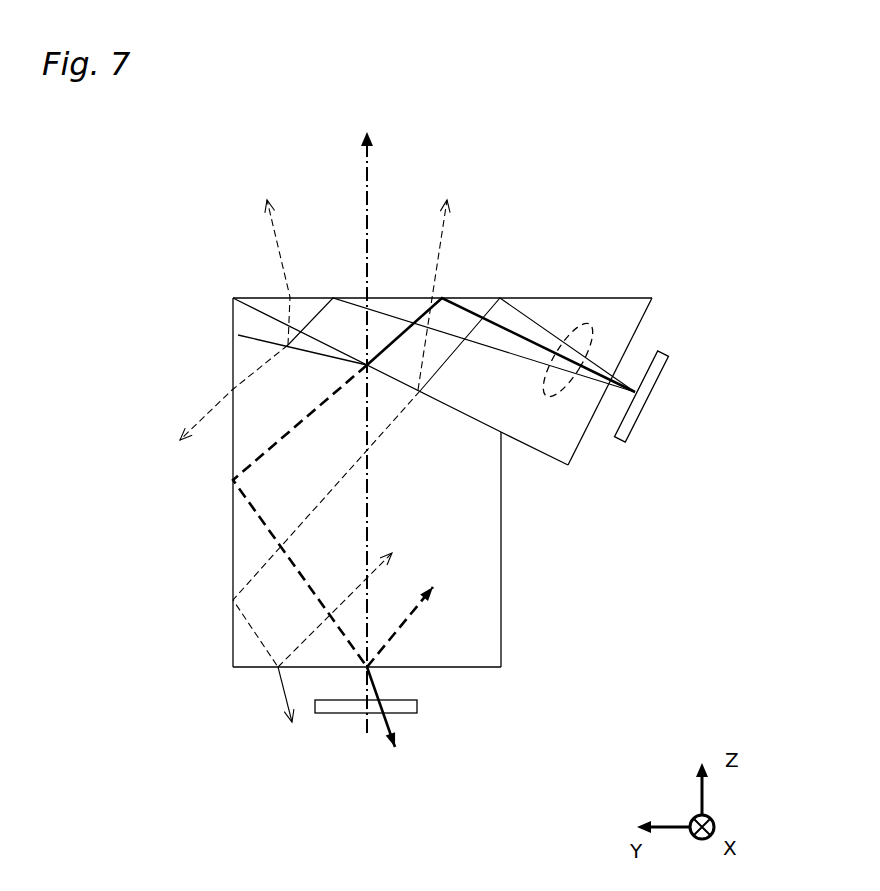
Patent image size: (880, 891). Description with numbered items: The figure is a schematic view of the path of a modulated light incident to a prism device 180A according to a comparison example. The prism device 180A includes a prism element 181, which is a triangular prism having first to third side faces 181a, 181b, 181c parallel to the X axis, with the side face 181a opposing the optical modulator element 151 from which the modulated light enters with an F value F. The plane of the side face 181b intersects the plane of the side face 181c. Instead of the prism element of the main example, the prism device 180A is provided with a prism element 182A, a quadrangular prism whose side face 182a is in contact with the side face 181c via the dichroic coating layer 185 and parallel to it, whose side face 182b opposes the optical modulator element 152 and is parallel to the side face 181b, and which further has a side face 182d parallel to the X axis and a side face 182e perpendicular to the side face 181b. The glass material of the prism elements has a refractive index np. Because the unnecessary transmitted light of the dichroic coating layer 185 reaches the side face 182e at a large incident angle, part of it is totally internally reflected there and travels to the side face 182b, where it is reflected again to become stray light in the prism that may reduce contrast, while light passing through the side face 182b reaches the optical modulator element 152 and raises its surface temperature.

The prism device 180A is at (190, 213).
The prism element 182A is at (470, 628).
The fourth side face 182a is at (450, 407).
The fifth side face 182b is at (442, 668).
The side face 182d is at (502, 585).
The side face 182e is at (232, 547).
The prism element 181 is at (620, 324).
The first side face 181a is at (630, 343).
The second side face 181b is at (478, 298).
The third side face 181c is at (540, 453).
The dichroic coating layer 185 is at (238, 335).
The optical modulator element 151 is at (625, 422).
The optical modulator element 152 is at (388, 708).
The F value F is at (578, 322).
The refractive index np is at (502, 463).